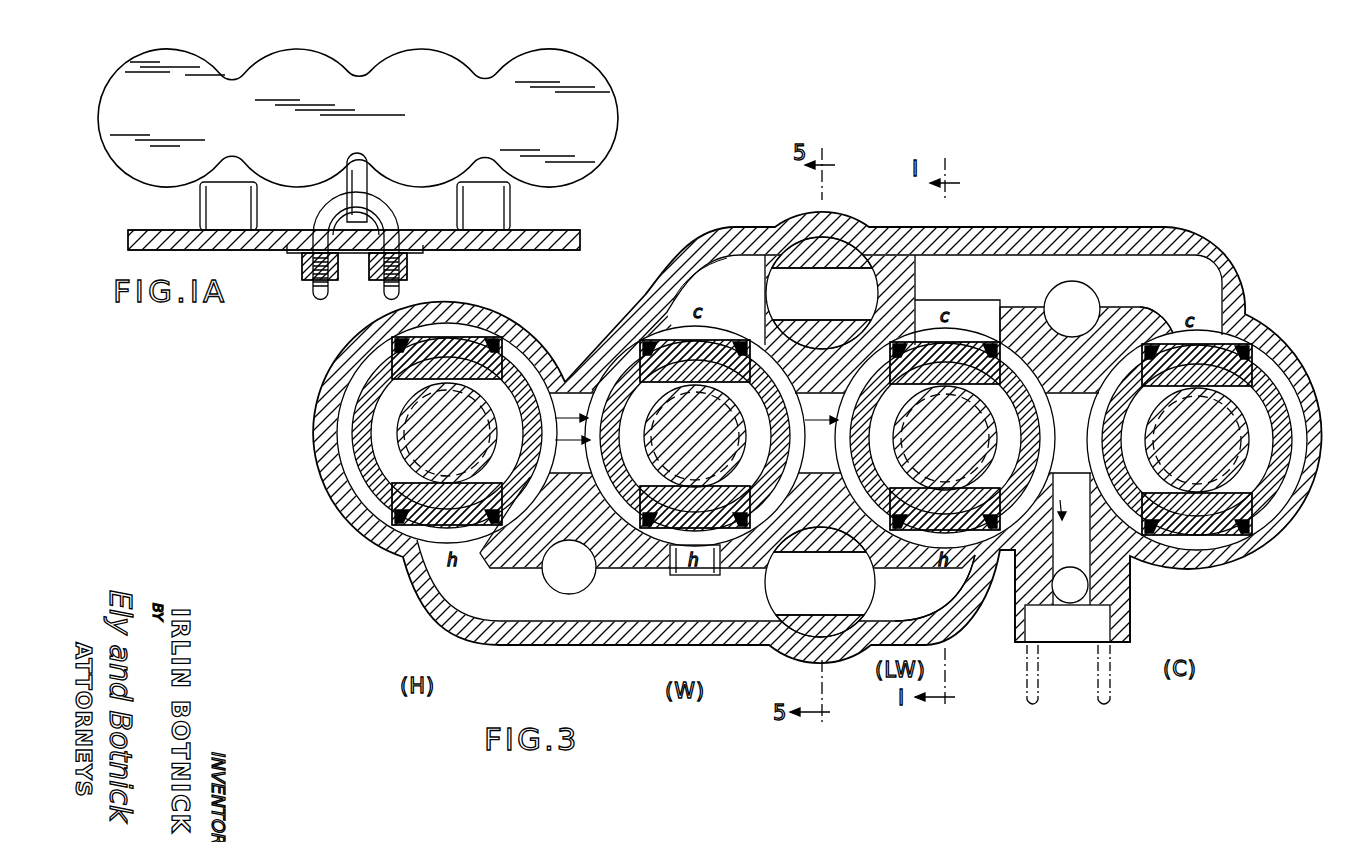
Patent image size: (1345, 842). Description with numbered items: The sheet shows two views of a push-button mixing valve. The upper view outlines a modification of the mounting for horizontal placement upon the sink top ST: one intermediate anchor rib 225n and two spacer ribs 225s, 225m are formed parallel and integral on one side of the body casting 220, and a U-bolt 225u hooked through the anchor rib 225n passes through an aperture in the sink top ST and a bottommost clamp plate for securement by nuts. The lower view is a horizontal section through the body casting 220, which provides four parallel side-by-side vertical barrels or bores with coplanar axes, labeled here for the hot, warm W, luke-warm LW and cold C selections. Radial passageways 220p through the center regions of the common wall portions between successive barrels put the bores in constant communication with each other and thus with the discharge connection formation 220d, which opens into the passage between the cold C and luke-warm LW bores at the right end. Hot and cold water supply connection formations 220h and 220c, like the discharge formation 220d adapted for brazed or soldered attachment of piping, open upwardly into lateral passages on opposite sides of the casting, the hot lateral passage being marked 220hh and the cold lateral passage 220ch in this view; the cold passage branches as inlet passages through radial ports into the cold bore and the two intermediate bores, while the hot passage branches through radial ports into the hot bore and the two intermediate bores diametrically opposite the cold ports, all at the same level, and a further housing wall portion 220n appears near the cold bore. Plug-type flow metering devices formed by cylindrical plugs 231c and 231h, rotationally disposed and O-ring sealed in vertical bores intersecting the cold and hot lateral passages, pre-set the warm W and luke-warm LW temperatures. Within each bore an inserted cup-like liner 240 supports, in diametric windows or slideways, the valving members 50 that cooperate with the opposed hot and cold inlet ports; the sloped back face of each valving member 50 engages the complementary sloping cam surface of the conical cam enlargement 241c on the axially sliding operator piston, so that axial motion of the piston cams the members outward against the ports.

In FIG. 1A, the body casting 220 is at (588, 172).
In FIG. 3, the body casting 220 is at (1062, 228).
In FIG. 1A, the spacer ribs 225s is at (217, 209).
In FIG. 1A, the U-bolt 225u is at (340, 214).
In FIG. 1A, the spacer rib 225m is at (361, 186).
In FIG. 1A, the anchor rib 225n is at (414, 256).
In FIG. 1A, the sink top ST is at (572, 241).
In FIG. 3, the cup-like liner 240 is at (368, 372).
In FIG. 3, the valving members 50 is at (423, 336).
In FIG. 3, the cam enlargement 241c is at (390, 510).
In FIG. 3, the hot water inlet connection formation 220h is at (574, 392).
In FIG. 3, the housing duct 220hh is at (692, 566).
In FIG. 3, the radial passageways 220p is at (820, 582).
In FIG. 3, the cylindrical plug 231c is at (848, 239).
In FIG. 3, the cylindrical plug 231h is at (885, 600).
In FIG. 3, the chamber passage 220ch is at (940, 340).
In FIG. 3, the cold water inlet connection formation 220c is at (1080, 308).
In FIG. 3, the housing wall 220n is at (1169, 309).
In FIG. 3, the discharge connection formation 220d is at (1130, 600).
In FIG. 3, the wash chamber W is at (695, 436).
In FIG. 3, the lower wash chamber LW is at (945, 438).
In FIG. 3, the cold chamber C is at (1197, 440).